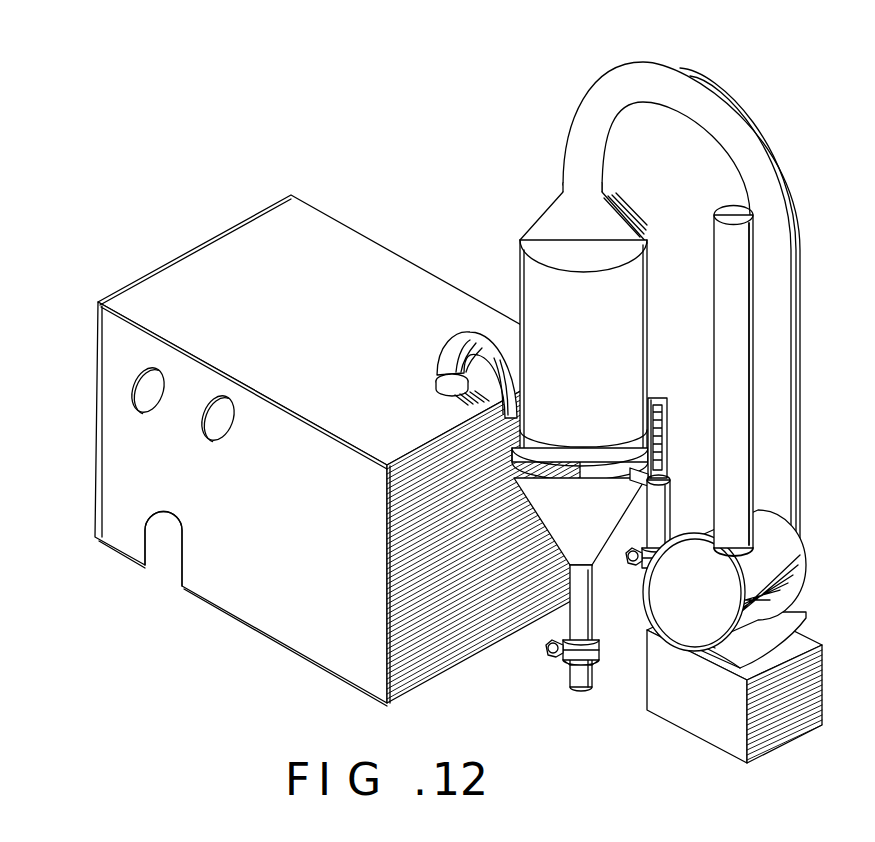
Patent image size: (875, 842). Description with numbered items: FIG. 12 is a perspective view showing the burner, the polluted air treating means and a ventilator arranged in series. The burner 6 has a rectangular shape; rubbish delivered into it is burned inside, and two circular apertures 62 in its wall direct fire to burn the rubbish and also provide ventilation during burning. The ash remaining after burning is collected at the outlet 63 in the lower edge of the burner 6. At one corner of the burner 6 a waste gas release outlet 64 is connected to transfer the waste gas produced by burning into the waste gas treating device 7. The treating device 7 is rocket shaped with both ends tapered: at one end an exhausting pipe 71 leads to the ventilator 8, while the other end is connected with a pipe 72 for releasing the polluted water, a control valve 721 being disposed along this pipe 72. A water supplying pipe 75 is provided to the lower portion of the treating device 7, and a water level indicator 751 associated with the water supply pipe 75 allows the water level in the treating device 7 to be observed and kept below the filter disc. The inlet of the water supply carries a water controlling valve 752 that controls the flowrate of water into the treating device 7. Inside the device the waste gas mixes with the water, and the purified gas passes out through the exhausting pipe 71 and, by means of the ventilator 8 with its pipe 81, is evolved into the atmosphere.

The burner 6 is at (321, 440).
The circular apertures 62 is at (145, 397).
The outlet 63 is at (158, 548).
The waste gas release outlet 64 is at (462, 342).
The waste gas treating device 7 is at (632, 333).
The exhausting pipe 71 is at (658, 72).
The pipe 72 is at (594, 598).
The control valve 721 is at (557, 647).
The water supplying pipe 75 is at (663, 522).
The gauge strip 751 is at (661, 459).
The water controlling valve 752 is at (631, 575).
The ventilator 8 is at (793, 578).
The suction pipe 81 is at (743, 395).